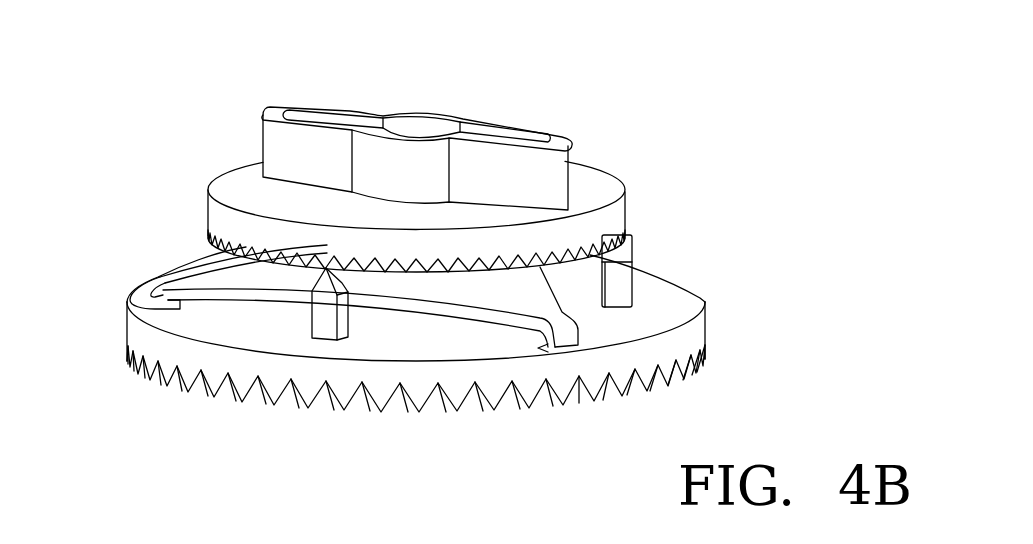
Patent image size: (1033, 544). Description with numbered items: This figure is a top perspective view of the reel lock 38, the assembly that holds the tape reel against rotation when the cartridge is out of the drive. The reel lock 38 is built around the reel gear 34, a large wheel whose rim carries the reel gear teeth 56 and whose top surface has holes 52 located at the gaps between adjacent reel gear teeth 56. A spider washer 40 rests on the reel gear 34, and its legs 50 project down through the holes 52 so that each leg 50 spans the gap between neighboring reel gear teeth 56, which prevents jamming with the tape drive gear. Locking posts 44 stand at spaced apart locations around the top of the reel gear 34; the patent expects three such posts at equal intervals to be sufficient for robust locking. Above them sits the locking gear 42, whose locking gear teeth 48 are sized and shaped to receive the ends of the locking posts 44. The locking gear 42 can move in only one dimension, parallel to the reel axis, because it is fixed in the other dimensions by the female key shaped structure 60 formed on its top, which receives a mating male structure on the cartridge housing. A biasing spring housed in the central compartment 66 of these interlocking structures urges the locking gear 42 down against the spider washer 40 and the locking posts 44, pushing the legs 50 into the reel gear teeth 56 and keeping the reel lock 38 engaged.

The reel lock 38 is at (188, 101).
The reel gear 34 is at (128, 317).
The reel gear teeth 56 is at (380, 413).
The holes 52 is at (573, 397).
The locking gear 42 is at (622, 210).
The locking gear teeth 48 is at (526, 271).
The spider washer 40 is at (341, 286).
The legs 50 is at (160, 272).
The locking posts 44 is at (318, 320).
The female key shaped structure 60 is at (458, 126).
The central compartment 66 is at (413, 127).